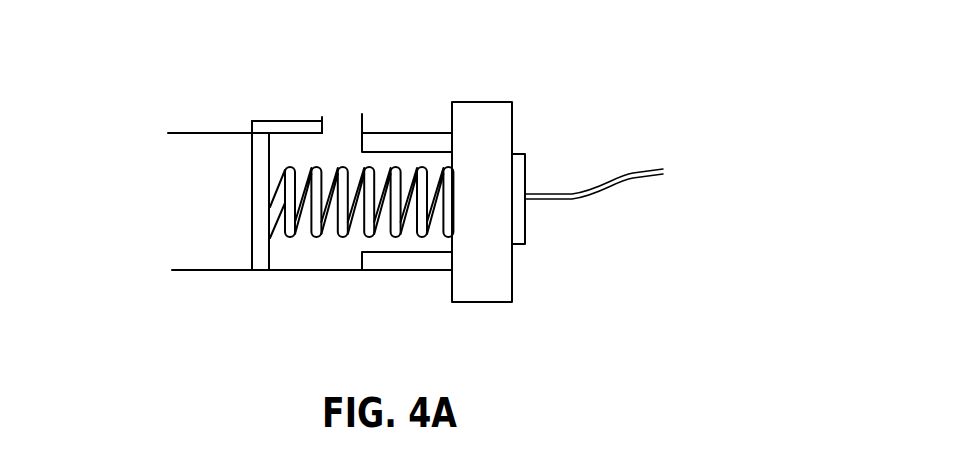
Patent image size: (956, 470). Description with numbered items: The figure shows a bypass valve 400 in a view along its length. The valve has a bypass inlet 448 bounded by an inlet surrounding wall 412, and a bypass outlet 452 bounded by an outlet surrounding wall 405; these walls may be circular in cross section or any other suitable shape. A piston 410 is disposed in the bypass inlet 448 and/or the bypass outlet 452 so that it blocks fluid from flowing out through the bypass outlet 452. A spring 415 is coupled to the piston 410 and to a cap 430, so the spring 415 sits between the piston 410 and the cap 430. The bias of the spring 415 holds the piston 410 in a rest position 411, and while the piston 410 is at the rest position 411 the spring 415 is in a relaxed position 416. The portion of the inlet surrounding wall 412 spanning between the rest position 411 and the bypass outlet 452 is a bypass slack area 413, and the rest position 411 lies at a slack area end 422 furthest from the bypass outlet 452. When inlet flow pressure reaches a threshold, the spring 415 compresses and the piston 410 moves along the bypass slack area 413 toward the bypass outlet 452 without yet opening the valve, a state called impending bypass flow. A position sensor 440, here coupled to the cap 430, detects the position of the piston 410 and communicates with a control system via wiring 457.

The bypass valve 400 is at (140, 85).
The outlet surrounding wall 405 is at (367, 132).
The piston 410 is at (262, 260).
The rest position 411 is at (243, 280).
The inlet surrounding wall 412 is at (198, 133).
The bypass slack area 413 is at (287, 120).
The spring 415 is at (365, 233).
The relaxed position 416 is at (320, 254).
The slack area end 422 is at (240, 116).
The cap 430 is at (512, 123).
The position sensor 440 is at (525, 165).
The bypass inlet 448 is at (170, 197).
The bypass outlet 452 is at (333, 102).
The wiring 457 is at (591, 196).